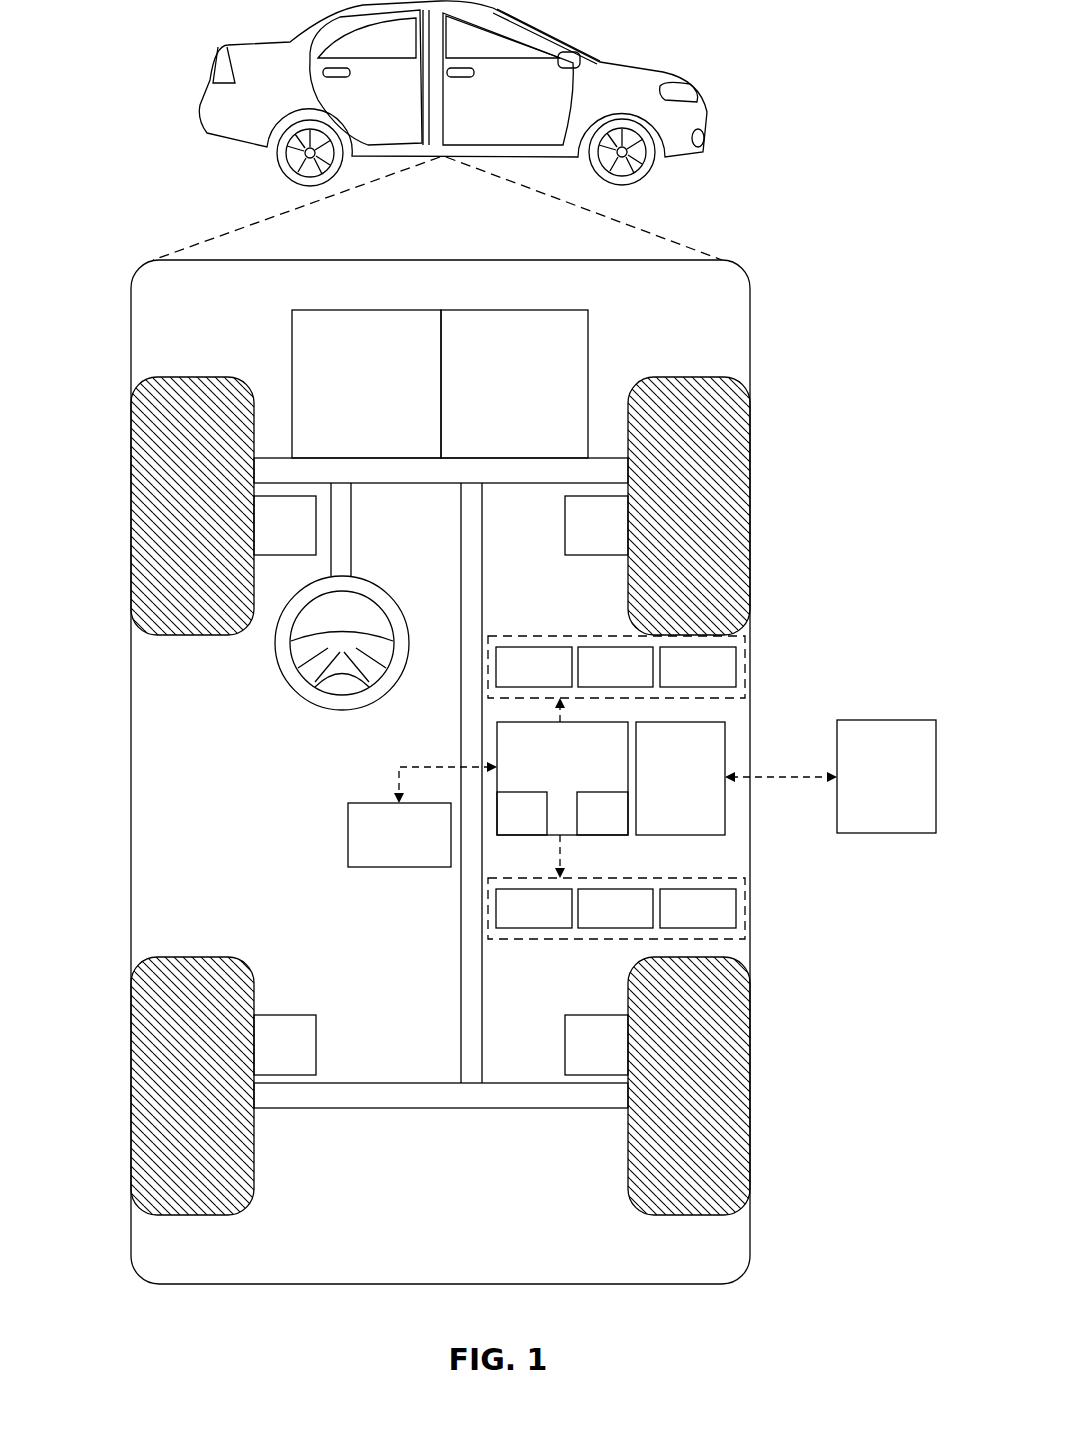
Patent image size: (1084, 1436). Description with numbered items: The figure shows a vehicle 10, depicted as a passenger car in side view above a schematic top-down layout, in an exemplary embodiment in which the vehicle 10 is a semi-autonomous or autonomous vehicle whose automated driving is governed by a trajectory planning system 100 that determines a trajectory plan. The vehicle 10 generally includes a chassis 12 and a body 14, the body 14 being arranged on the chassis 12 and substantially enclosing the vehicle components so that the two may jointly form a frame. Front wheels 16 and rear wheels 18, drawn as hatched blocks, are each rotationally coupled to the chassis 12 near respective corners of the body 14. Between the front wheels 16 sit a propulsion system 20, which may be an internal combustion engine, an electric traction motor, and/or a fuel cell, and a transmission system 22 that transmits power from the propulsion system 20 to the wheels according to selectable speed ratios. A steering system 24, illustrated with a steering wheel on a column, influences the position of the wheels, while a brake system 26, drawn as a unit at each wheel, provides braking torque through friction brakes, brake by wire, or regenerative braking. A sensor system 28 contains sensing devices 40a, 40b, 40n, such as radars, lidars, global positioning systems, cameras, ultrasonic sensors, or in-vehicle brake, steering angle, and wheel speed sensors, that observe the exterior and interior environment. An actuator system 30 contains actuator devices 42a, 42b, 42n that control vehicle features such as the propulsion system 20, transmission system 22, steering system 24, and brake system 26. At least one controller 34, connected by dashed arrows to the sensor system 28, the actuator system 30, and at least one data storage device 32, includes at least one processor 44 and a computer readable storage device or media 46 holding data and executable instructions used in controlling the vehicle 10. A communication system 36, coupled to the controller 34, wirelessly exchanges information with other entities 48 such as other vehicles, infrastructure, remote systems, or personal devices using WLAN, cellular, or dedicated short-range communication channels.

The vehicle 10 is at (213, 80).
The trajectory planning system 100 is at (772, 284).
The chassis 12 is at (461, 1012).
The body 14 is at (131, 725).
The front wheels 16 is at (192, 377).
The rear wheels 18 is at (190, 1215).
The propulsion system 20 is at (351, 397).
The transmission system 22 is at (499, 397).
The steering system 24 is at (356, 549).
The brake system 26 is at (270, 539).
The sensor system 28 is at (577, 636).
The actuator system 30 is at (580, 939).
The data storage device 32 is at (384, 848).
The controller 34 is at (545, 768).
The communication system 36 is at (665, 790).
The sensing device 40a is at (513, 681).
The sensing device 40b is at (594, 681).
The sensing device 40n is at (677, 681).
The actuator device 42a is at (513, 922).
The actuator device 42b is at (594, 922).
The actuator device 42n is at (677, 922).
The processor 44 is at (507, 827).
The computer readable storage device or media 46 is at (587, 827).
The other entities 48 is at (871, 790).